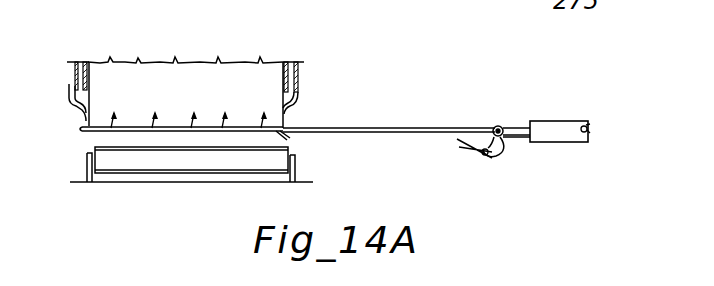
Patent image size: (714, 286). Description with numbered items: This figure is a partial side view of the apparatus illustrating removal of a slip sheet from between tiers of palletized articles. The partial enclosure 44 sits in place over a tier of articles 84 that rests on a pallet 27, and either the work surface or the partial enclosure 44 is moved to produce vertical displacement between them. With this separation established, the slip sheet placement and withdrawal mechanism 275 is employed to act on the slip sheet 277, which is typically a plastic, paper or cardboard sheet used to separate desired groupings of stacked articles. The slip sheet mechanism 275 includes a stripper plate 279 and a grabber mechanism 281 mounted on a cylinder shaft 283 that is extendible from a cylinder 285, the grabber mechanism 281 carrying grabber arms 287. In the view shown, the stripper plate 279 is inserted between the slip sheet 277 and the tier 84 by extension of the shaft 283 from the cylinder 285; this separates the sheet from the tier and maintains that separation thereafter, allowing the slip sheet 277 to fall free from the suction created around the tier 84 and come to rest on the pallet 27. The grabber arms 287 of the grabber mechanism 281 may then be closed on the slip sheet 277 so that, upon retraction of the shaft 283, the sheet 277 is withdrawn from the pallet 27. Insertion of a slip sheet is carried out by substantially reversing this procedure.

The pallet 27 is at (245, 163).
The partial enclosure 44 is at (300, 98).
The tier of articles 84 is at (297, 107).
The slip sheet placement and withdrawal mechanism 275 is at (483, 120).
The slip sheet 277 is at (82, 128).
The stripper plate 279 is at (333, 128).
The grabber mechanism 281 is at (501, 150).
The cylinder shaft 283 is at (513, 128).
The cylinder 285 is at (565, 138).
The grabber arms 287 is at (466, 155).